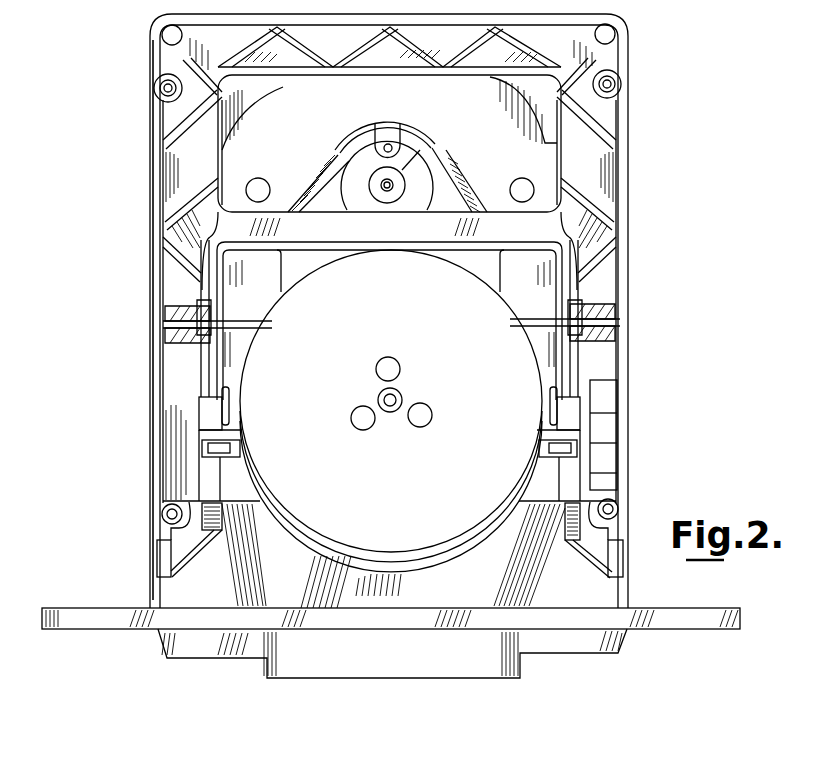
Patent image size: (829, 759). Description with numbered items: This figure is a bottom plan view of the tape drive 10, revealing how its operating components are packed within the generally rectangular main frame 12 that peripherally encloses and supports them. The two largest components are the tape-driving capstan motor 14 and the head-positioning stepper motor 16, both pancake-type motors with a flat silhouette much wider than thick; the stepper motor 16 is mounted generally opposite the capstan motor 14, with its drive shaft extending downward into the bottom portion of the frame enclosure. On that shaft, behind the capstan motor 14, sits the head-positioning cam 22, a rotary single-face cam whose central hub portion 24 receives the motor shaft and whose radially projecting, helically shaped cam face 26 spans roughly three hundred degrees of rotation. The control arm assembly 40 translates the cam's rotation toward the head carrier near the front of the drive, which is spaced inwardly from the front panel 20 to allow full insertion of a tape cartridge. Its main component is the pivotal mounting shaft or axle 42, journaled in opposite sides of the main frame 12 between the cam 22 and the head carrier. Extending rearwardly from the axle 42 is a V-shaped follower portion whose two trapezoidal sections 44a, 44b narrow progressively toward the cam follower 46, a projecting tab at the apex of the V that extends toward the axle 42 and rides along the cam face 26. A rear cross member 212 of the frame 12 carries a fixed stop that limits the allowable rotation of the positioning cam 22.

The tape drive 10 is at (629, 128).
The main frame 12 is at (158, 205).
The capstan motor 14 is at (401, 313).
The head-positioning stepper motor 16 is at (506, 141).
The front panel 20 is at (193, 658).
The head-positioning cam 22 is at (421, 156).
The central hub portion 24 is at (375, 184).
The cam face 26 is at (430, 192).
The control arm assembly 40 is at (322, 161).
The pivotal mounting shaft 42 is at (172, 323).
The first section of follower portion 44a is at (229, 310).
The second section of follower portion 44b is at (552, 292).
The cam follower 46 is at (392, 132).
The rear cross member 212 is at (347, 238).